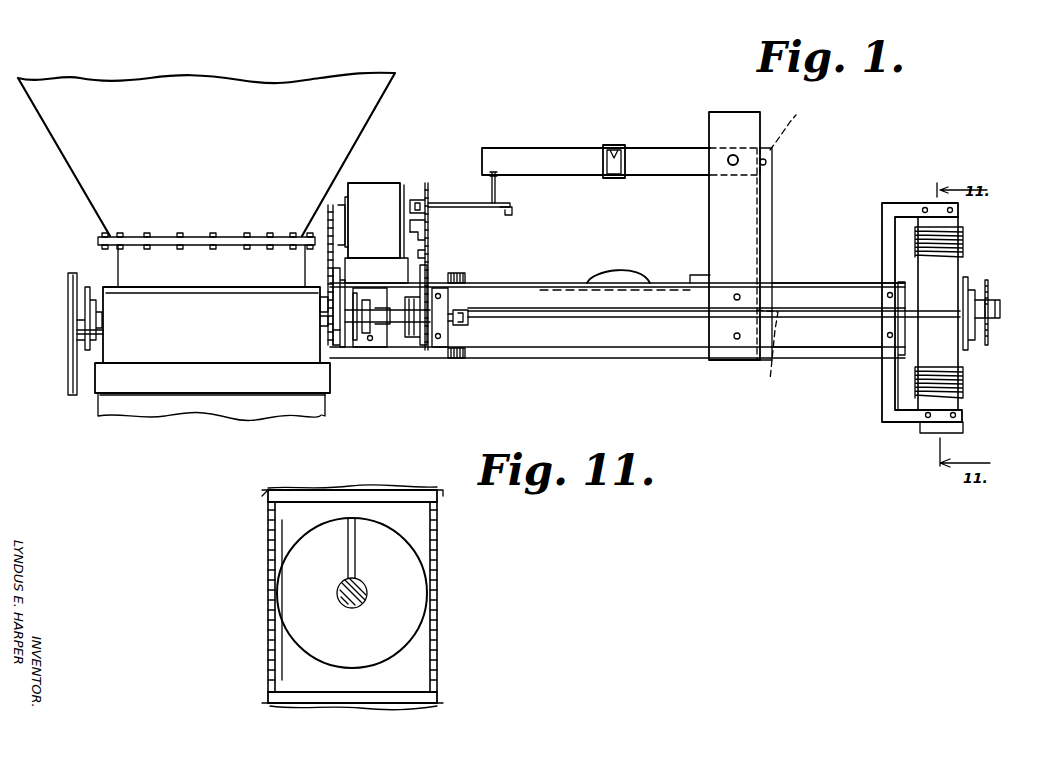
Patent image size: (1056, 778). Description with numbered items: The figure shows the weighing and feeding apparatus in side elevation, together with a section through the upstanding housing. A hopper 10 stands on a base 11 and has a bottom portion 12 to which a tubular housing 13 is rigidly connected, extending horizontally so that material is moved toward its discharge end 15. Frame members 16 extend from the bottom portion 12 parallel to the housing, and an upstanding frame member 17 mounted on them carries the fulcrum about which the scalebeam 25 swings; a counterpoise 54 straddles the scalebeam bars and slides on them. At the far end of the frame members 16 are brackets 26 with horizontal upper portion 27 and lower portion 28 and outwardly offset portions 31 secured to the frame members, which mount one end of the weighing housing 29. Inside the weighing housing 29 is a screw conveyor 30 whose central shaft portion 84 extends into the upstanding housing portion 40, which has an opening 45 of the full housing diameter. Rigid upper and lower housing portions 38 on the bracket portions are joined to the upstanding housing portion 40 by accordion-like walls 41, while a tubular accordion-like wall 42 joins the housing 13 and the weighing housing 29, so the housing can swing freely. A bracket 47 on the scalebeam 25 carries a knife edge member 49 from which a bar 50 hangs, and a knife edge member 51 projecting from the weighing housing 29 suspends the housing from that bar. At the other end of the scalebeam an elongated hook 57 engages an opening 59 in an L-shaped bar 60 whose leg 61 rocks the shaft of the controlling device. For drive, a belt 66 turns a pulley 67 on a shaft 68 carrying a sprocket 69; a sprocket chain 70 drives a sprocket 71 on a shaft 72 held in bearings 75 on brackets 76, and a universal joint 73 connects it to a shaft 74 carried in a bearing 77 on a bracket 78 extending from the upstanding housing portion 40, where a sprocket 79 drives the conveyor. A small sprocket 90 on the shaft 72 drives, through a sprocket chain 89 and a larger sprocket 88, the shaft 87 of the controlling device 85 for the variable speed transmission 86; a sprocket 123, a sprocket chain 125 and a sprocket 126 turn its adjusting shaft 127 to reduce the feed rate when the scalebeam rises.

In FIG. 1, the hopper 10 is at (312, 88).
In FIG. 1, the base 11 is at (169, 404).
In FIG. 1, the bottom portion 12 is at (132, 266).
In FIG. 1, the tubular housing 13 is at (315, 277).
In FIG. 1, the discharge end 15 is at (460, 282).
In FIG. 1, the frame members 16 is at (824, 282).
In FIG. 1, the upstanding frame member 17 is at (742, 218).
In FIG. 1, the scalebeam 25 is at (648, 162).
In FIG. 1, the brackets 26 is at (882, 234).
In FIG. 1, the upper portion 27 is at (908, 210).
In FIG. 1, the lower portion 28 is at (903, 416).
In FIG. 1, the weighing housing 29 is at (528, 282).
In FIG. 11, the weighing housing 29 is at (288, 572).
In FIG. 1, the screw conveyor 30 is at (624, 278).
In FIG. 11, the screw conveyor 30 is at (378, 540).
In FIG. 1, the outwardly offset portions 31 is at (883, 330).
In FIG. 1, the upper and lower housing portions 38 is at (950, 223).
In FIG. 1, the upstanding housing portion 40 is at (948, 276).
In FIG. 11, the upstanding housing portion 40 is at (290, 520).
In FIG. 1, the accordion-like walls 41 is at (965, 240).
In FIG. 11, the accordion-like walls 41 is at (390, 490).
In FIG. 1, the tubular accordion-like wall 42 is at (466, 278).
In FIG. 11, the opening 45 is at (420, 554).
In FIG. 1, the bracket 47 is at (796, 127).
In FIG. 1, the knife edge member 49 is at (769, 163).
In FIG. 1, the bar 50 is at (769, 235).
In FIG. 1, the knife edge member 51 is at (773, 273).
In FIG. 1, the counterpoise 54 is at (612, 146).
In FIG. 1, the elongated hook 57 is at (497, 190).
In FIG. 1, the opening 59 is at (513, 213).
In FIG. 1, the bar 60 is at (455, 203).
In FIG. 1, the leg 61 is at (417, 193).
In FIG. 1, the belt 66 is at (73, 398).
In FIG. 1, the pulley 67 is at (84, 332).
In FIG. 1, the shaft 68 is at (96, 335).
In FIG. 1, the sprocket 69 is at (334, 348).
In FIG. 1, the sprocket chain 70 is at (345, 288).
In FIG. 1, the sprocket 71 is at (370, 292).
In FIG. 1, the shaft 72 is at (396, 324).
In FIG. 1, the universal joint 73 is at (470, 322).
In FIG. 1, the shaft 74 is at (620, 316).
In FIG. 1, the bearings 75 is at (416, 298).
In FIG. 1, the brackets 76 is at (385, 340).
In FIG. 1, the bearing 77 is at (978, 330).
In FIG. 1, the bracket 78 is at (976, 292).
In FIG. 1, the sprocket 79 is at (1000, 310).
In FIG. 11, the central shaft portion 84 is at (368, 592).
In FIG. 1, the controlling device 85 is at (385, 190).
In FIG. 1, the variable speed transmission 86 is at (238, 356).
In FIG. 1, the shaft 87 is at (428, 236).
In FIG. 1, the sprocket 88 is at (428, 224).
In FIG. 1, the sprocket chain 89 is at (428, 255).
In FIG. 1, the sprocket 90 is at (432, 328).
In FIG. 1, the sprocket 123 is at (333, 210).
In FIG. 1, the sprocket chain 125 is at (330, 245).
In FIG. 1, the sprocket 126 is at (330, 318).
In FIG. 1, the adjusting shaft 127 is at (318, 300).